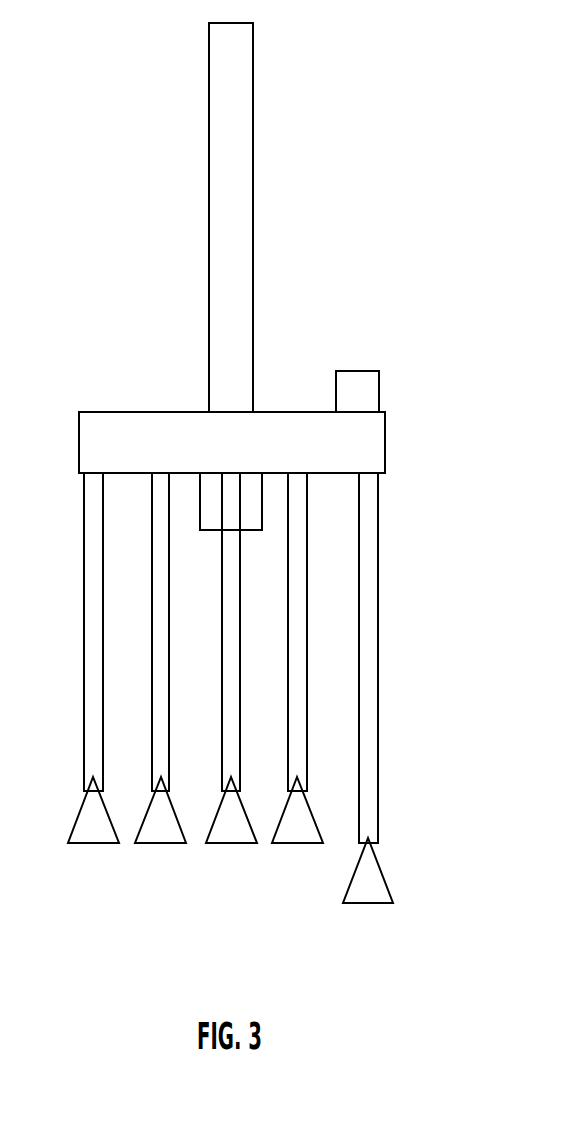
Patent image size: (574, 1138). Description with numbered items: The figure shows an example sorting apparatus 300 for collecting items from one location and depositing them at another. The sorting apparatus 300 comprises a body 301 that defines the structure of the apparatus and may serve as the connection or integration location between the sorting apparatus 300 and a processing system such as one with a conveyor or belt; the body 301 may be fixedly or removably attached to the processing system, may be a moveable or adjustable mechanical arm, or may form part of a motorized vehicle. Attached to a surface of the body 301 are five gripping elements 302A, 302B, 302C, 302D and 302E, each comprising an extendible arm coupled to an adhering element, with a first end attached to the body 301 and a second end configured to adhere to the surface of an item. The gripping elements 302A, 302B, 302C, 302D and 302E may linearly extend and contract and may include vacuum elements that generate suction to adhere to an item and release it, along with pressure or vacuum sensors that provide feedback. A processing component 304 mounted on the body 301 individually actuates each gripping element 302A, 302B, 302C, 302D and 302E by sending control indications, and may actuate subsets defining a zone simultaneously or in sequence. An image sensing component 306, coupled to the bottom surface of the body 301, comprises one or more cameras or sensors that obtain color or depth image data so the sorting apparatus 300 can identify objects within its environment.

The sorting apparatus 300 is at (451, 121).
The body 301 is at (247, 455).
The gripping element 302A is at (93, 843).
The gripping element 302B is at (160, 843).
The gripping element 302C is at (230, 843).
The gripping element 302D is at (298, 843).
The gripping element 302E is at (367, 903).
The processing component 304 is at (358, 371).
The image sensing component 306 is at (200, 517).